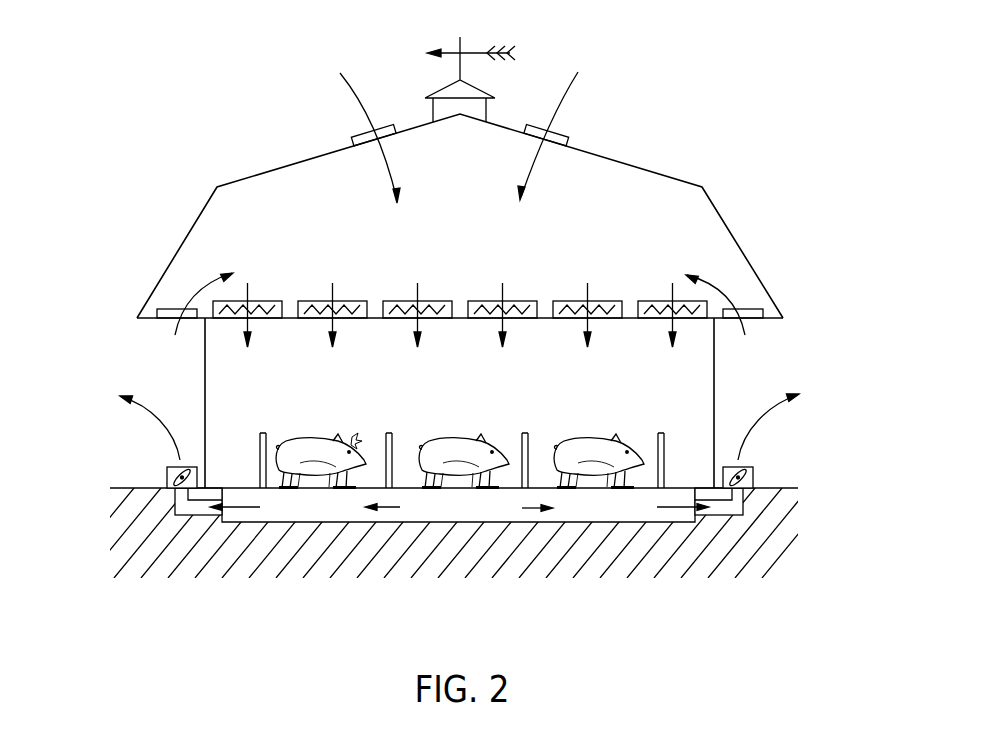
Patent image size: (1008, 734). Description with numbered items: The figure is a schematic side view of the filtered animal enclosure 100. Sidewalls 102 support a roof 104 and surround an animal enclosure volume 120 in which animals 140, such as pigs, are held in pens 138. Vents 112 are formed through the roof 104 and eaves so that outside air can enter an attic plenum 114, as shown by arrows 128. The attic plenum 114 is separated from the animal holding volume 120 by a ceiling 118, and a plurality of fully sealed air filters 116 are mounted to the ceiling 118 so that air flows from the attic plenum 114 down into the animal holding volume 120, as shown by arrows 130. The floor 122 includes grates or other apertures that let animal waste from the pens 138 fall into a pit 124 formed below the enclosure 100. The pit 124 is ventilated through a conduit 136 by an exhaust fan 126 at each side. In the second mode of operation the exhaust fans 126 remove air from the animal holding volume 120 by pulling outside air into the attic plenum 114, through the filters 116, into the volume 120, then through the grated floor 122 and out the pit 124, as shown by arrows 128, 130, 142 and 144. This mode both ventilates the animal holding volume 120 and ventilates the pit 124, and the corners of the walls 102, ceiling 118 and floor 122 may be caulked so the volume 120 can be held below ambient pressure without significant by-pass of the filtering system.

The animal enclosure 100 is at (727, 108).
The sidewalls 102 is at (207, 398).
The roof 104 is at (243, 177).
The vents 112 is at (363, 135).
The attic plenum 114 is at (442, 165).
The fully sealed air filters 116 is at (475, 302).
The ceiling 118 is at (628, 317).
The animal enclosure volume 120 is at (457, 392).
The floor 122 is at (547, 488).
The pit 124 is at (410, 515).
The exhaust fan 126 is at (165, 478).
The arrows 128 is at (357, 82).
The arrows 130 is at (413, 292).
The conduit 136 is at (185, 512).
The pens 138 is at (358, 437).
The animals 140 is at (317, 438).
The arrows 142 is at (397, 510).
The arrows 144 is at (155, 413).